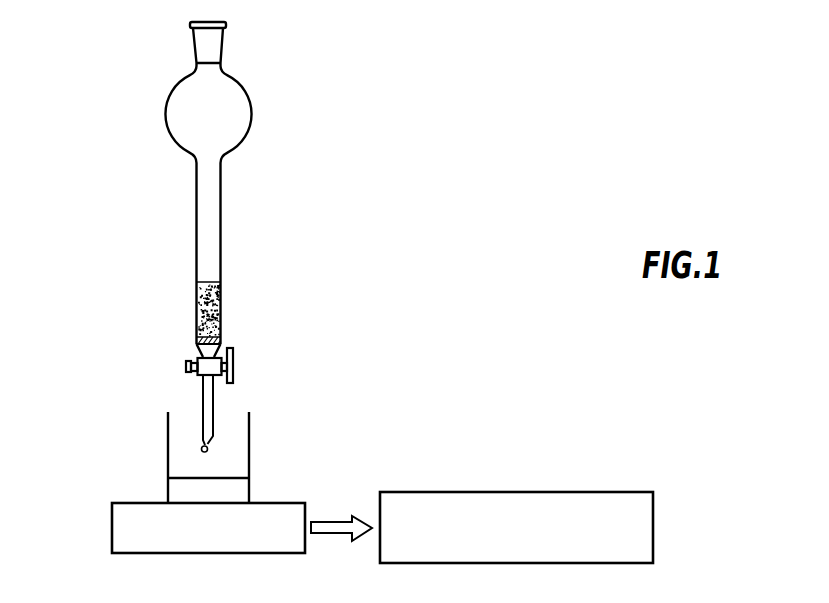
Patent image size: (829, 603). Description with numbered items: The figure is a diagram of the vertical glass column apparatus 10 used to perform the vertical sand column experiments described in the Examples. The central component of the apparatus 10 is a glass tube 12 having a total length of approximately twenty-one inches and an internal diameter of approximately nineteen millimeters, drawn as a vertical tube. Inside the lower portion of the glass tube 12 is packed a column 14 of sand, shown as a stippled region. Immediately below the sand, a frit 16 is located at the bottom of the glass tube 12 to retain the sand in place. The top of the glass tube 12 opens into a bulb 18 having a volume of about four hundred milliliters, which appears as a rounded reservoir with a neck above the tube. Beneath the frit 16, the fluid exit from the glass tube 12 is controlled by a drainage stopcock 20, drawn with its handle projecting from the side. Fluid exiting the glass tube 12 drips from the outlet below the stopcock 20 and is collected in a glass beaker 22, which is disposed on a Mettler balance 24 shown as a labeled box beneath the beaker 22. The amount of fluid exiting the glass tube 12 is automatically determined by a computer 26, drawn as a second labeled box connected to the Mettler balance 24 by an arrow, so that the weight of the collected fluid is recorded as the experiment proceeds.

The apparatus 10 is at (416, 104).
The glass tube 12 is at (196, 220).
The column of sand 14 is at (196, 293).
The frit 16 is at (196, 332).
The bulb 18 is at (171, 93).
The drainage stopcock 20 is at (236, 362).
The glass beaker 22 is at (168, 447).
The Mettler balance 24 is at (112, 517).
The computer 26 is at (653, 513).